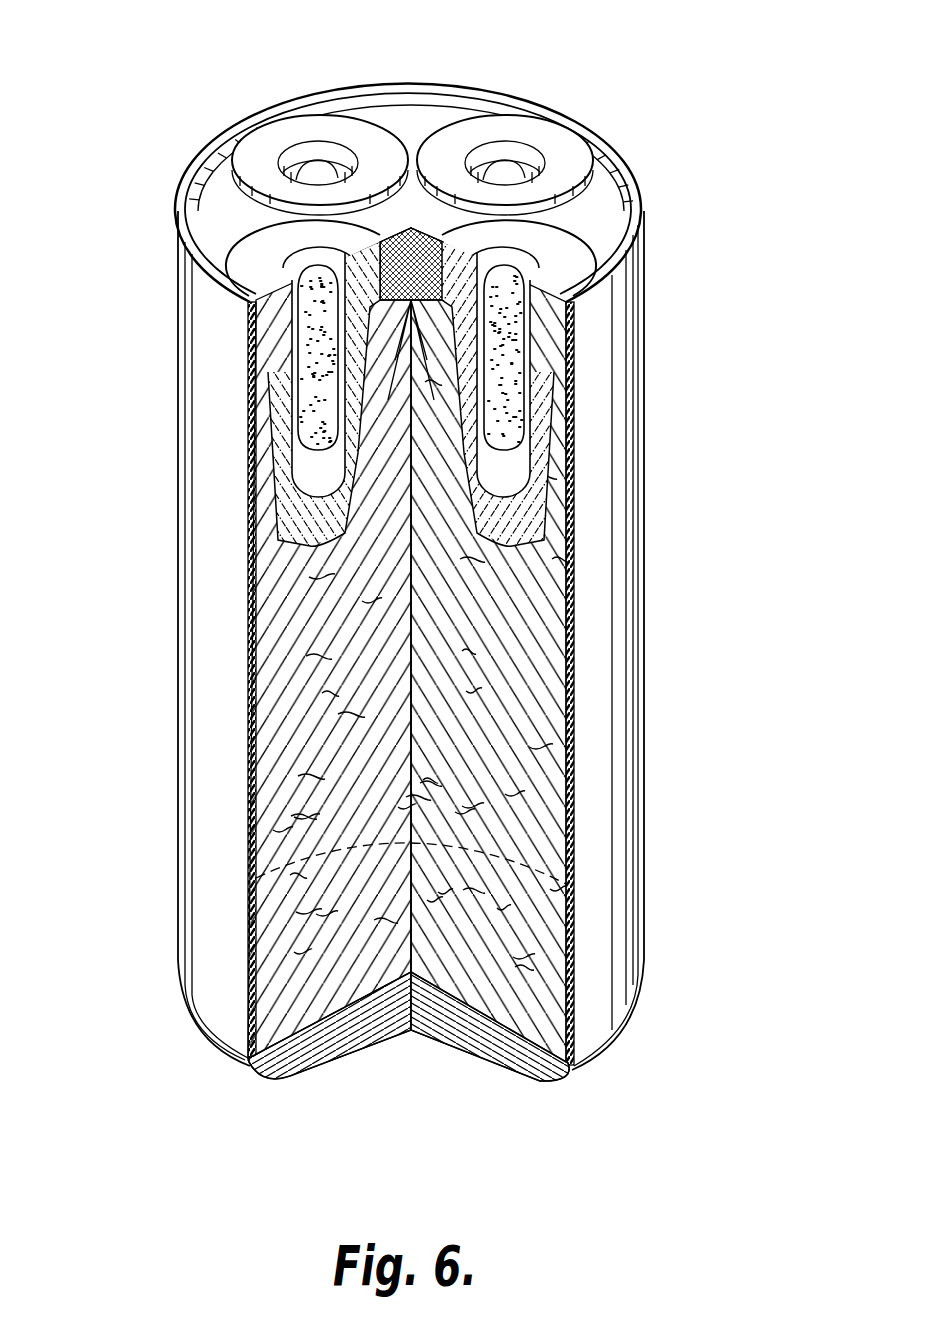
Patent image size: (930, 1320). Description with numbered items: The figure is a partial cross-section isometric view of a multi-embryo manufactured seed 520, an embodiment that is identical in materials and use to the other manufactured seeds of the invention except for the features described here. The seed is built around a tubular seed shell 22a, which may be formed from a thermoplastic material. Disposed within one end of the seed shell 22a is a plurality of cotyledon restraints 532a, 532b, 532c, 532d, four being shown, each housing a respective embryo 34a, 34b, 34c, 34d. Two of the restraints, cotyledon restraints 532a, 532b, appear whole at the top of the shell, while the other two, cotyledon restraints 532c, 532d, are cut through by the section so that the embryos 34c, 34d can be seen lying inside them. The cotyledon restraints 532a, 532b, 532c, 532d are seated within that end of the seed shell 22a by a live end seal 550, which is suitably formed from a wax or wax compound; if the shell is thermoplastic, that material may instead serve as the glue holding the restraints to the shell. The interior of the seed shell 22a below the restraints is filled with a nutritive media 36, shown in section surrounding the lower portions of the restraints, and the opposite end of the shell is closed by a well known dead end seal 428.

The seed shell 22a is at (178, 352).
The manufactured seed 520 is at (648, 536).
The live end seal 550 is at (413, 118).
The cotyledon restraint 532a is at (302, 120).
The cotyledon restraint 532b is at (515, 117).
The cotyledon restraint 532c is at (590, 246).
The cotyledon restraint 532d is at (242, 240).
The embryo 34a is at (320, 173).
The embryo 34b is at (497, 175).
The embryo 34c is at (560, 465).
The embryo 34d is at (300, 456).
The nutritive media 36 is at (565, 720).
The dead end seal 428 is at (490, 1060).